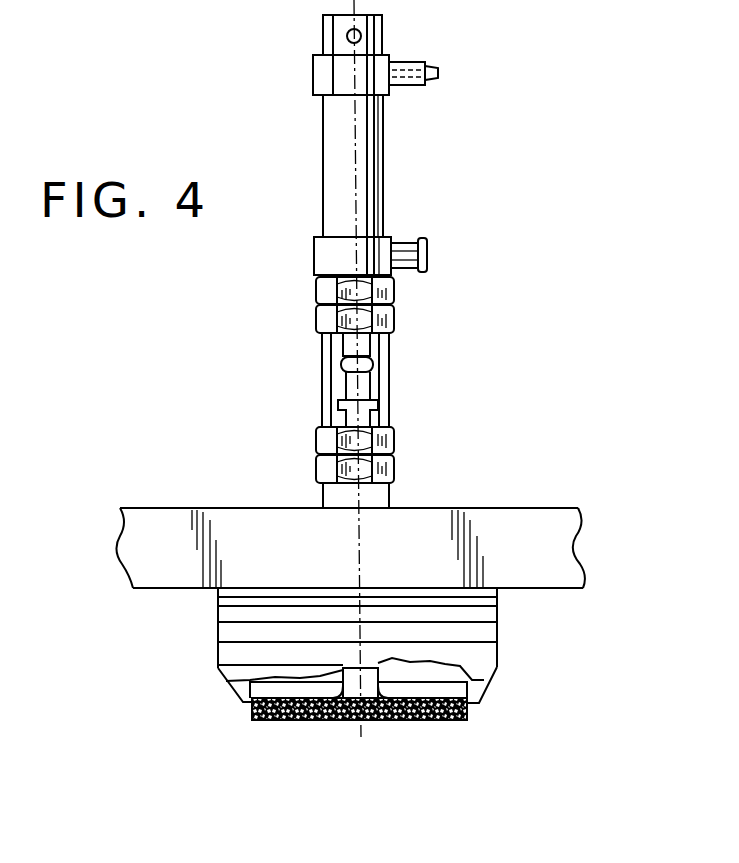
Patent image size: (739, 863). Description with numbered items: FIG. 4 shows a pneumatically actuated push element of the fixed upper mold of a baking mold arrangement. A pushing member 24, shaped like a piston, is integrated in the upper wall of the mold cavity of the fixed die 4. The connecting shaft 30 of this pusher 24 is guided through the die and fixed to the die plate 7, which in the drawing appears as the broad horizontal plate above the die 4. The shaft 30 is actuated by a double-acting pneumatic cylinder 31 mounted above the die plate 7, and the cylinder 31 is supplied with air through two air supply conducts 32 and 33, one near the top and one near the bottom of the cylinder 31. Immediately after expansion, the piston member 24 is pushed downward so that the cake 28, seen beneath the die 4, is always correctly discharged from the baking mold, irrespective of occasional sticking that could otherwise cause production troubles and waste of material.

The fixed die 4 is at (484, 628).
The die plate 7 is at (513, 515).
The pushing member 24 is at (383, 722).
The cake 28 is at (320, 722).
The connecting shaft 30 is at (362, 400).
The double-acting pneumatic cylinder 31 is at (372, 203).
The air supply conduct 32 is at (425, 65).
The air supply conduct 33 is at (428, 256).